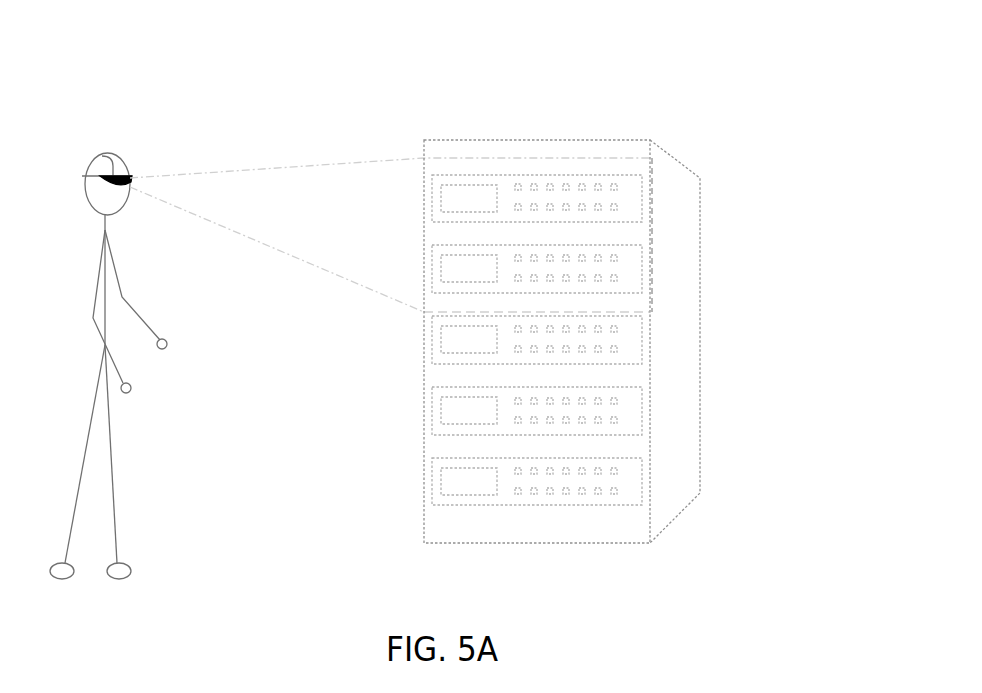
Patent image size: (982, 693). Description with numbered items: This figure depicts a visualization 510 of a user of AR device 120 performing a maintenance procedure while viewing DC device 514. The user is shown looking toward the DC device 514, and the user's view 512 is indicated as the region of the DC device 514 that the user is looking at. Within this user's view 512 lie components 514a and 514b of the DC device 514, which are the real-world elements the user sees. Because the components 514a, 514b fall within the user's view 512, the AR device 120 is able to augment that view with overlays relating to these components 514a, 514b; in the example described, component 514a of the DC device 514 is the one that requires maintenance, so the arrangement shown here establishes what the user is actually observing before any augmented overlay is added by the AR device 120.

The AR device 120 is at (99, 152).
The visualization 510 is at (707, 128).
The user's view 512 is at (316, 163).
The DC device 514 is at (450, 140).
The component 514a is at (642, 205).
The component 514b is at (642, 280).